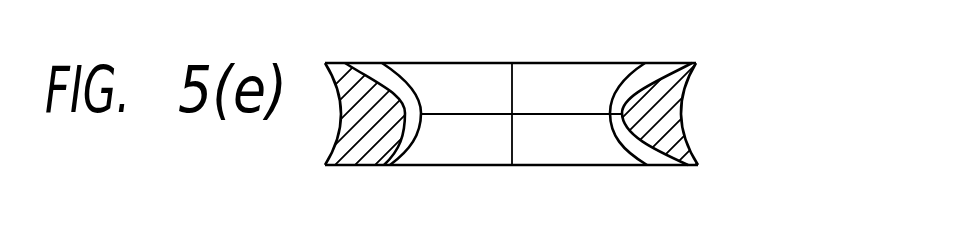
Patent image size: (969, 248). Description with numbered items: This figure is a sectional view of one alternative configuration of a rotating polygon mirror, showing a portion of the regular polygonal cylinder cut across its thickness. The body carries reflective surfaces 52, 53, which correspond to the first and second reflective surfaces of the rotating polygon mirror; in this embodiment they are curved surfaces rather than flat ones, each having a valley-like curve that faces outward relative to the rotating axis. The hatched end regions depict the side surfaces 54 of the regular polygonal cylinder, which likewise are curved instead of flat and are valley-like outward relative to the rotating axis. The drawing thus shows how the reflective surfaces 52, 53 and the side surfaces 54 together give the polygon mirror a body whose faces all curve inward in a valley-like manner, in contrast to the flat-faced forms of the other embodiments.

The reflective surface 52 is at (631, 148).
The reflective surface 53 is at (655, 77).
The side surface 54 is at (687, 90).